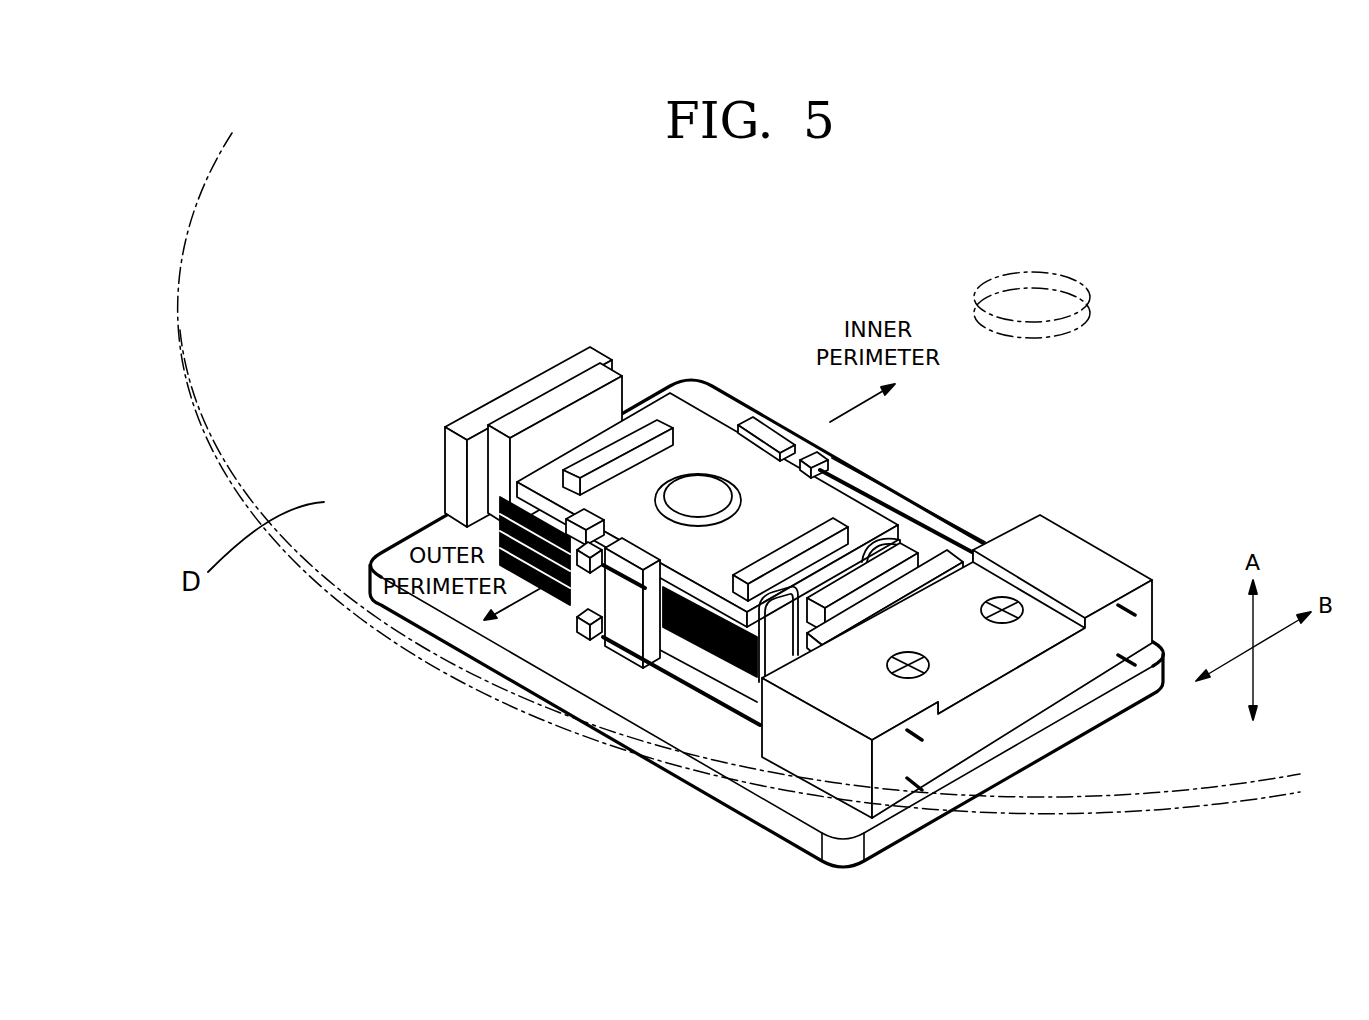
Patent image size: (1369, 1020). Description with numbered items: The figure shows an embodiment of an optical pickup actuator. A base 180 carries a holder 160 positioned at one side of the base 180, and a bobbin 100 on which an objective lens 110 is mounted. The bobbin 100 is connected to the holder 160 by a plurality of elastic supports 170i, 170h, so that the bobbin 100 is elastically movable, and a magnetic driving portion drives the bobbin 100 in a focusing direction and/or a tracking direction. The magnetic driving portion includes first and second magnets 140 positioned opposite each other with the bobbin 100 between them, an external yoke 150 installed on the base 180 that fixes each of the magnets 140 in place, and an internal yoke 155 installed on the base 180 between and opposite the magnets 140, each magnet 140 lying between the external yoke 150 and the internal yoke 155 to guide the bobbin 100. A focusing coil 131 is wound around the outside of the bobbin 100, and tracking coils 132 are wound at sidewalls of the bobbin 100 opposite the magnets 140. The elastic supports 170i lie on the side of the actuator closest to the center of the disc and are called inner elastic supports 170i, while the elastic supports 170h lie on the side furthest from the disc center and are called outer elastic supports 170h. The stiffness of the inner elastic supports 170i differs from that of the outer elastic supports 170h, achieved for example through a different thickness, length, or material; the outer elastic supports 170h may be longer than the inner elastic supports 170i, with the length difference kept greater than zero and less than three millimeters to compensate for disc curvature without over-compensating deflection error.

The bobbin 100 is at (693, 422).
The objective lens 110 is at (712, 470).
The focusing coil 131 is at (707, 663).
The tracking coils 132 is at (870, 552).
The first and second magnets 140 is at (533, 410).
The external yoke 150 is at (588, 348).
The internal yoke 155 is at (637, 433).
The holder 160 is at (1078, 558).
The outer elastic supports 170h is at (662, 594).
The inner elastic supports 170i is at (884, 495).
The base 180 is at (437, 530).